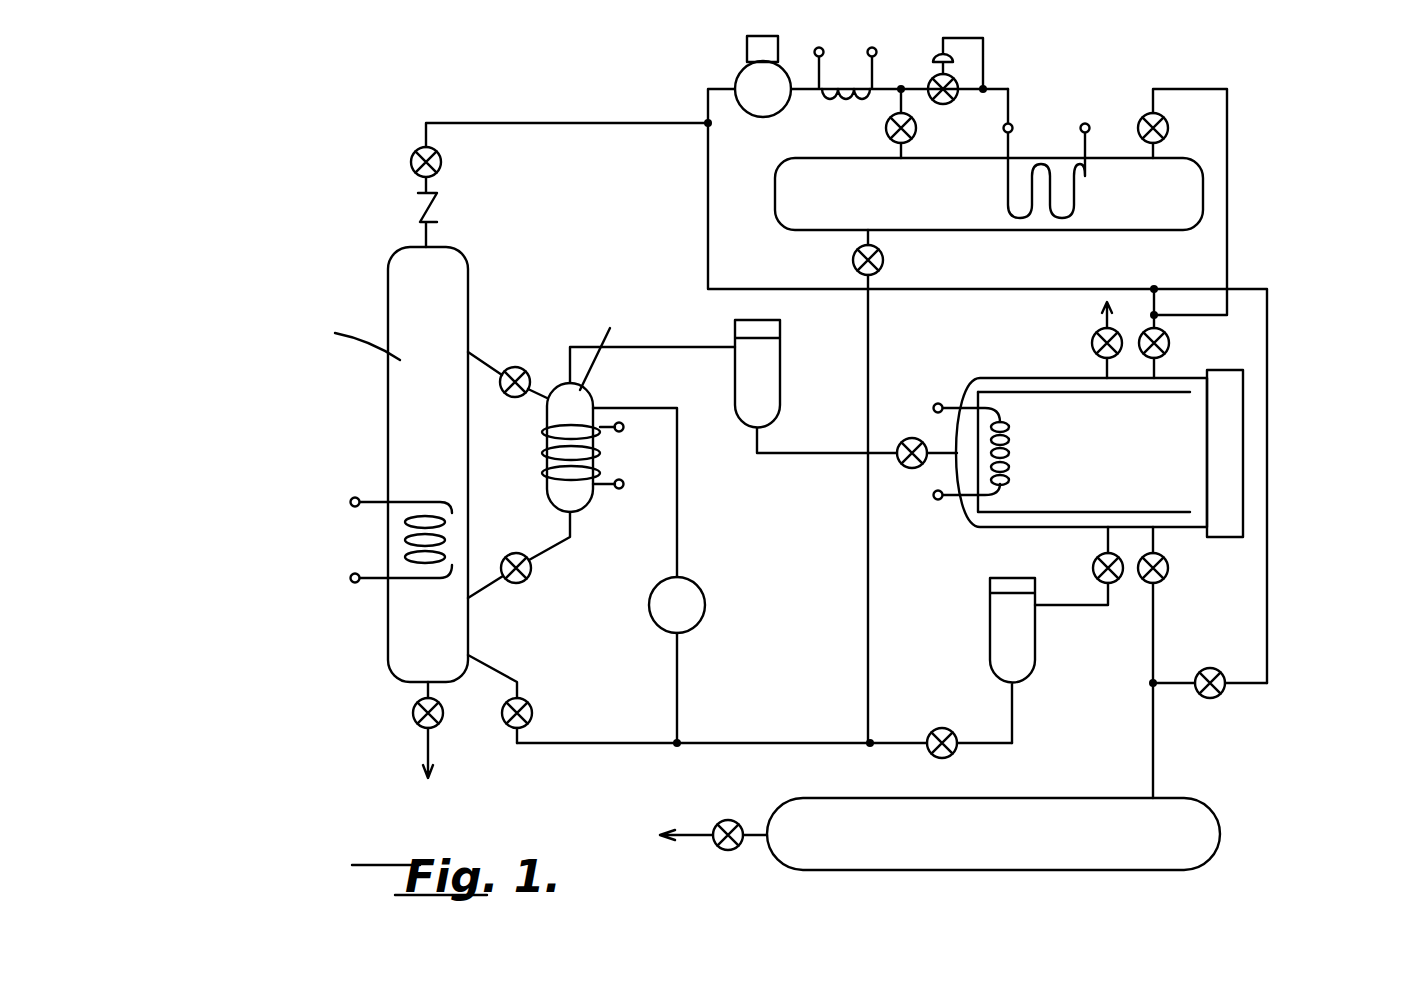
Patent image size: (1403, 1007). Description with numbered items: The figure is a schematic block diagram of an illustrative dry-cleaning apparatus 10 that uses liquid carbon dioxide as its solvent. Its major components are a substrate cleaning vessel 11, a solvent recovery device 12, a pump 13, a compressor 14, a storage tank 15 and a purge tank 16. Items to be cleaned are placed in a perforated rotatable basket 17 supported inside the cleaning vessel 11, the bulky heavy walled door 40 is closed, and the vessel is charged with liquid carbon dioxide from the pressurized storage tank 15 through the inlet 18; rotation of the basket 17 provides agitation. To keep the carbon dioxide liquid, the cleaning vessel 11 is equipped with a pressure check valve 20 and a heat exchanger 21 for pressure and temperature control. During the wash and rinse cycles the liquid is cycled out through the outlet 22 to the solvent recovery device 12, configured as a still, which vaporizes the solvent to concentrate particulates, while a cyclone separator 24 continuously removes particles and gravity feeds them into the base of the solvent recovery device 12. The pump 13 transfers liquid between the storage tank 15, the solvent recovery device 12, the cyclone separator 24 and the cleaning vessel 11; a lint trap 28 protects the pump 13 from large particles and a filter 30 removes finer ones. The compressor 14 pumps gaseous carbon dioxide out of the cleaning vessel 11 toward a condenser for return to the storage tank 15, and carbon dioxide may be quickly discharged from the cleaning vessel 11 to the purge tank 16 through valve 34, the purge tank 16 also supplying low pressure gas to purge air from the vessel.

The dry-cleaning apparatus 10 is at (1262, 483).
The cleaning vessel 11 is at (1200, 413).
The solvent recovery device 12 is at (388, 452).
The pump 13 is at (700, 626).
The compressor 14 is at (740, 78).
The storage tank 15 is at (1192, 165).
The purge tank 16 is at (870, 871).
The perforated rotatable basket 17 is at (1025, 515).
The inlet 18 is at (1162, 377).
The pressure check valve 20 is at (1094, 334).
The heat exchanger 21 is at (1008, 405).
The outlet 22 is at (1100, 532).
The cyclone separator 24 is at (580, 498).
The lint trap 28 is at (992, 661).
The filter 30 is at (783, 376).
The valve 34 is at (1160, 583).
The door 40 is at (1236, 436).